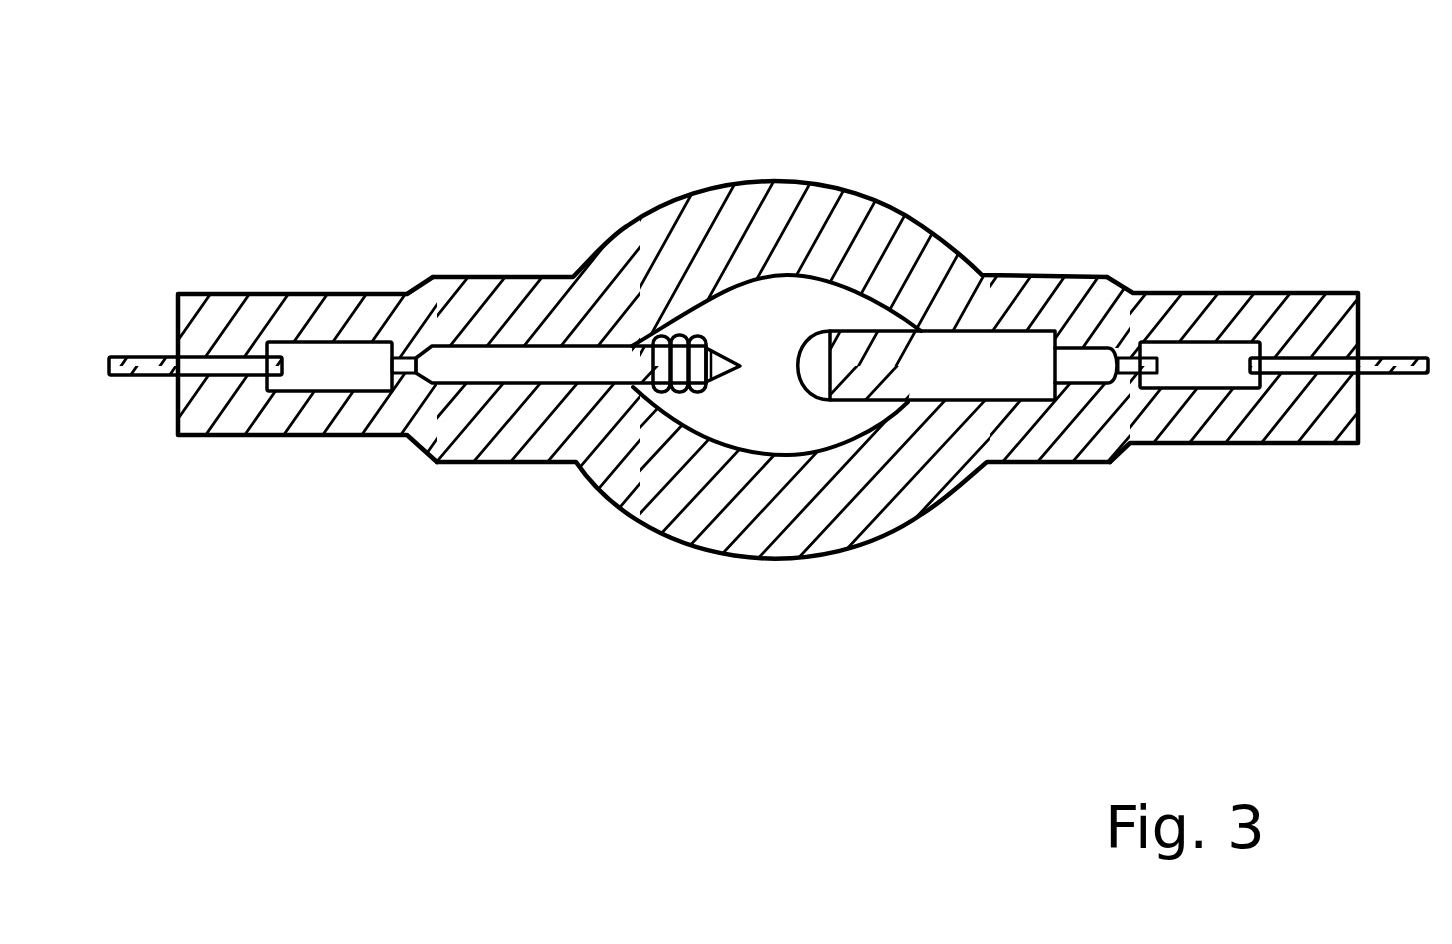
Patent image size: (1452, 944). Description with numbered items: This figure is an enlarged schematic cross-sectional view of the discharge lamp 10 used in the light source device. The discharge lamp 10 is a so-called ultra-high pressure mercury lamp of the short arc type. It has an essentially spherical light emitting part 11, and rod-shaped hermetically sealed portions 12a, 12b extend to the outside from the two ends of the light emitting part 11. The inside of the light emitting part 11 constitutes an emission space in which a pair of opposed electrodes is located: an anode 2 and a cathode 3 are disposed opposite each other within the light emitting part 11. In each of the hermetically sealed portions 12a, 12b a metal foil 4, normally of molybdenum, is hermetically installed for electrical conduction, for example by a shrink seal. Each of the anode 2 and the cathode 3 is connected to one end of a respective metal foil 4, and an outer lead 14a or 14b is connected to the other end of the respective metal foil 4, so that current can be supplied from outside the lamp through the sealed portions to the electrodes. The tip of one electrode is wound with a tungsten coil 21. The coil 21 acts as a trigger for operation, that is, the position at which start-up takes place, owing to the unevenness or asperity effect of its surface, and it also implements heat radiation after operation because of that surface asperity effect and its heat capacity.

The discharge lamp 10 is at (766, 176).
The light emitting part 11 is at (768, 562).
The hermetically sealed portion 12a is at (297, 438).
The hermetically sealed portion 12b is at (1167, 448).
The outer lead 14a is at (120, 353).
The outer lead 14b is at (1402, 353).
The metal foil 4 is at (302, 357).
The anode 2 is at (485, 346).
The tungsten coil 21 is at (680, 392).
The cathode 3 is at (1025, 345).